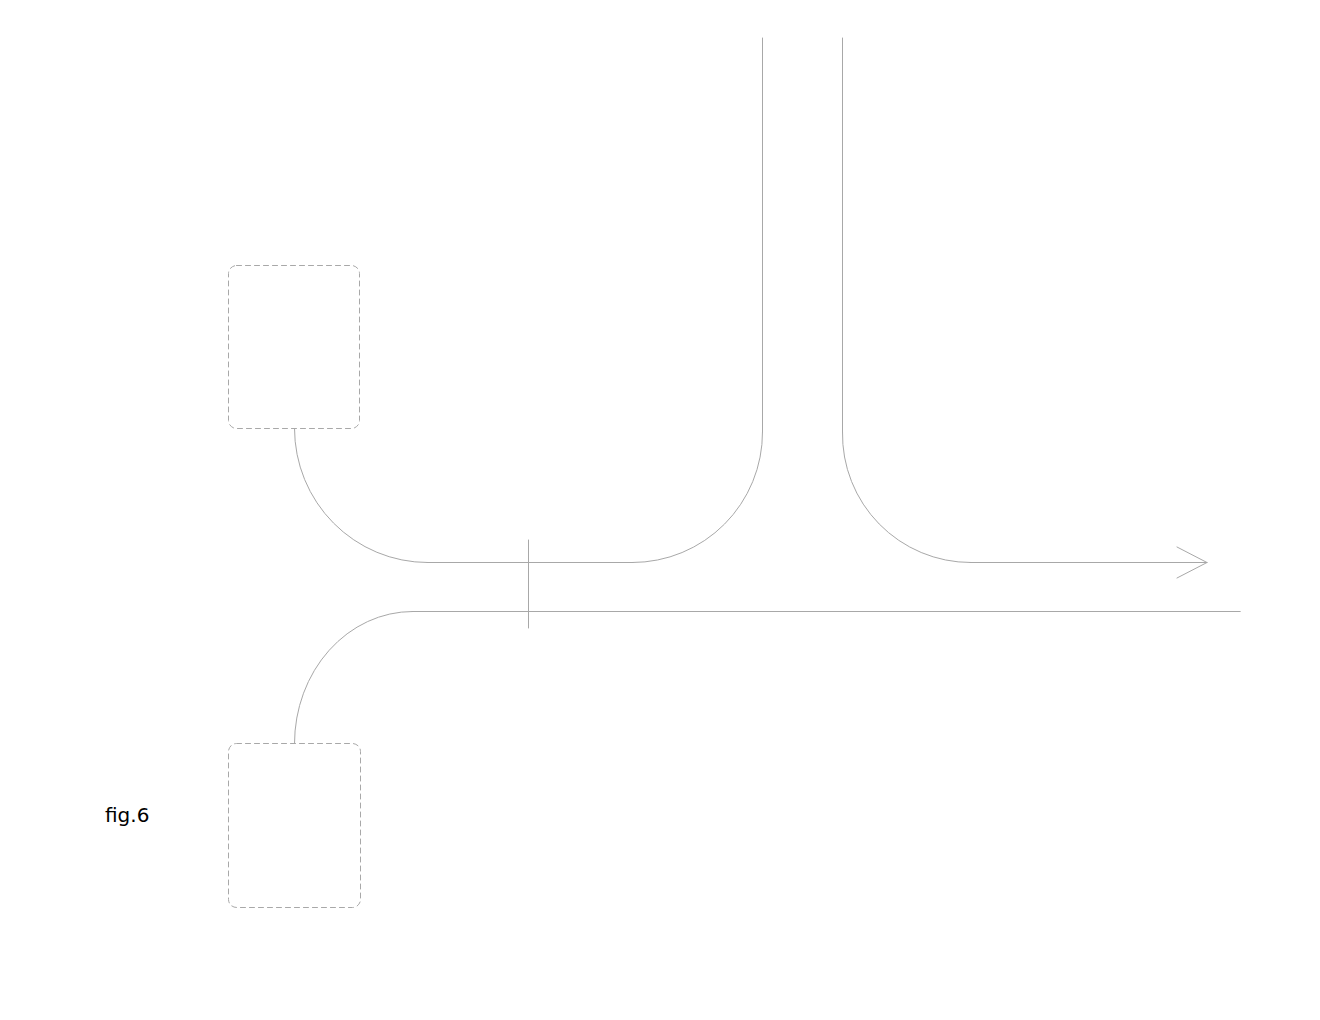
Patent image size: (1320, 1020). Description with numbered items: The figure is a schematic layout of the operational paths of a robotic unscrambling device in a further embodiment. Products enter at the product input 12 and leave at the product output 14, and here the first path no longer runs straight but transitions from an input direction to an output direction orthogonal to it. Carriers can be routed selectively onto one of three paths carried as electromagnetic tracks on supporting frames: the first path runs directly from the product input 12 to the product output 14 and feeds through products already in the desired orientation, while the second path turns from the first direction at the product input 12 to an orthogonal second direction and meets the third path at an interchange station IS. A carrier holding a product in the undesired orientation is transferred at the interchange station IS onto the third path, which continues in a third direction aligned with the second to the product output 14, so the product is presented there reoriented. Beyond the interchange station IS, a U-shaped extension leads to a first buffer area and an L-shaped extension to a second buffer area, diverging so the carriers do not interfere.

The product input 12 is at (803, 233).
The product output 14 is at (1098, 579).
The interchange station IS is at (519, 580).